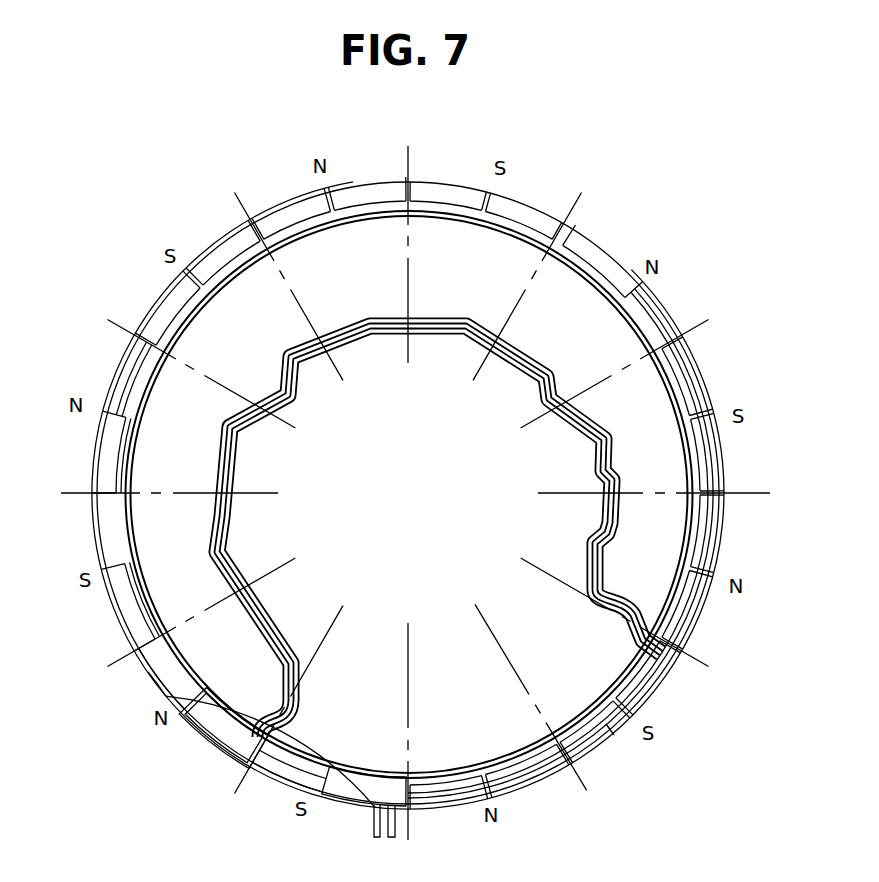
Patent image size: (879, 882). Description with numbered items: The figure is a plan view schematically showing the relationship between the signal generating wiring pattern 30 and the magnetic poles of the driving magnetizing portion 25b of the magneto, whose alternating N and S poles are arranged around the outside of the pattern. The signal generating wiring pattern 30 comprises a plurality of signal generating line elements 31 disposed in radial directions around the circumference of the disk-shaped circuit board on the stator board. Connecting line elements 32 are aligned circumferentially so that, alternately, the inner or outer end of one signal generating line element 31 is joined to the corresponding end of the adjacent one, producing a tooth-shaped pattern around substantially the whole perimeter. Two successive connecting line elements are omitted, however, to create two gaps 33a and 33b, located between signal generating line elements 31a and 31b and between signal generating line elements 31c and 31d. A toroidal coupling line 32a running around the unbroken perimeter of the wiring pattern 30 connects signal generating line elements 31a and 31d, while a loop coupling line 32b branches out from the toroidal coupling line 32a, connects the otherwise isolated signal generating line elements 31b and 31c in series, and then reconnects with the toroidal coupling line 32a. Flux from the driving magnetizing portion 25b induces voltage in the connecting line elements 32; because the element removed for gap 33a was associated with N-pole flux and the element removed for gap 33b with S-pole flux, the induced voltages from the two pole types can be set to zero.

The signal generating wiring pattern 30 is at (728, 373).
The signal generating line elements 31 is at (640, 291).
The signal generating line element 31a is at (160, 640).
The signal generating line element 31b is at (181, 694).
The signal generating line element 31c is at (260, 760).
The signal generating line element 31d is at (318, 781).
The connecting line elements 32 is at (593, 228).
The toroidal coupling line 32a is at (590, 712).
The loop coupling line 32b is at (228, 540).
The gap 33a is at (158, 691).
The gap 33b is at (278, 789).
The driving magnetizing portion 25b is at (603, 733).